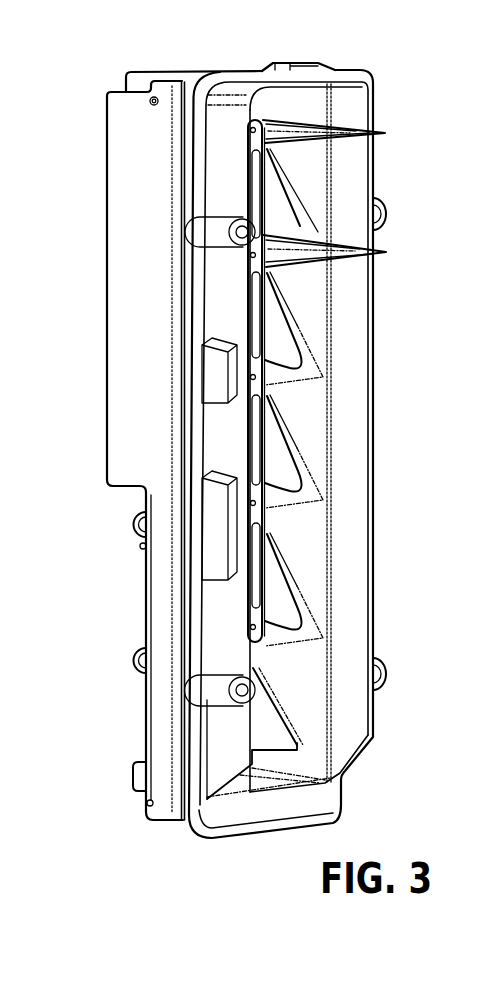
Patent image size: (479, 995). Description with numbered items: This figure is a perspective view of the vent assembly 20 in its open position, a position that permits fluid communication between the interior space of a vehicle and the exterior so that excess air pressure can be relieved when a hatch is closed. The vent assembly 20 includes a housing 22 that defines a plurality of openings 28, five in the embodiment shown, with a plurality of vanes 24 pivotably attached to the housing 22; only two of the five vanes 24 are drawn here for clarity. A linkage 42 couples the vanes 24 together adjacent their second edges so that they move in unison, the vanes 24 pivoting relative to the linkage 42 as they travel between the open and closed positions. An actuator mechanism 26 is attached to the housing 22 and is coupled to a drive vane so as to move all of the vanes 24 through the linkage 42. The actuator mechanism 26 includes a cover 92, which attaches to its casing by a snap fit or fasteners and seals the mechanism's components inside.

The vent assembly 20 is at (256, 66).
The housing 22 is at (350, 72).
The vanes 24 is at (353, 126).
The actuator mechanism 26 is at (93, 116).
The openings 28 is at (278, 311).
The linkage 42 is at (263, 603).
The cover 92 is at (127, 227).